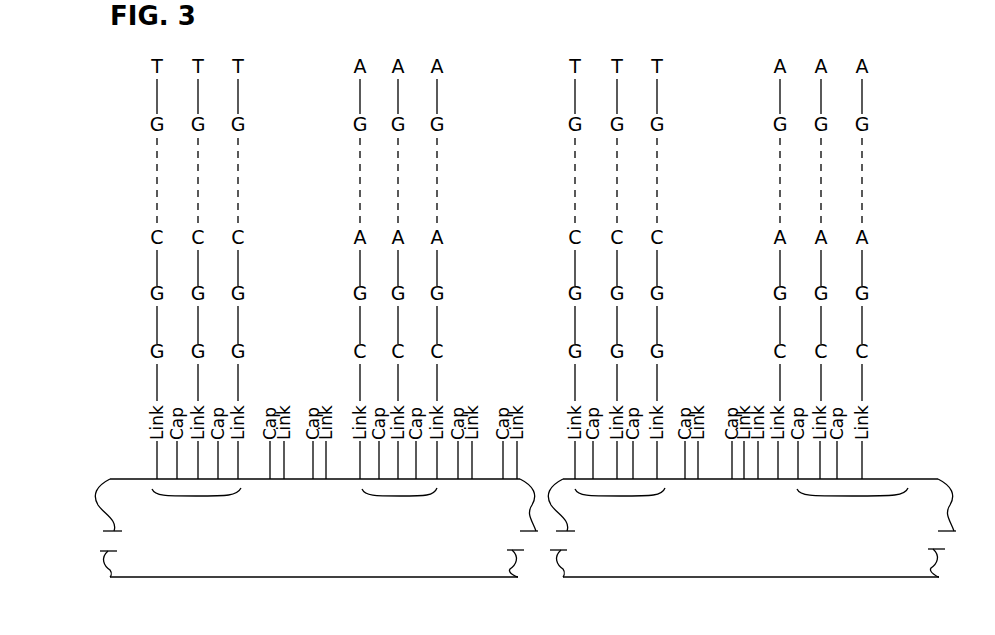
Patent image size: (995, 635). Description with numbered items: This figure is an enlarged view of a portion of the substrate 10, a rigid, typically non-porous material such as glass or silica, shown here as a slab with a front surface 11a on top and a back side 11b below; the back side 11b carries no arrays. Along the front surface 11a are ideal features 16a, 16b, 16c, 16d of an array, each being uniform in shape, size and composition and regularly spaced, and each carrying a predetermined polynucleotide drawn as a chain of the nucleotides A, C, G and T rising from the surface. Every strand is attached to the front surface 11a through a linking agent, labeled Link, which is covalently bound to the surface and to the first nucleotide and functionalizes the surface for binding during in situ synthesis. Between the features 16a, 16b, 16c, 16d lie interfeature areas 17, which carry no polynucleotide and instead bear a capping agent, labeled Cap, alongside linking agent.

The substrate 10 is at (599, 566).
The front surface 11a is at (132, 477).
The back side 11b is at (180, 580).
The feature 16a is at (198, 499).
The feature 16b is at (407, 500).
The feature 16c is at (617, 497).
The feature 16d is at (840, 498).
The interfeature area 17 is at (300, 484).